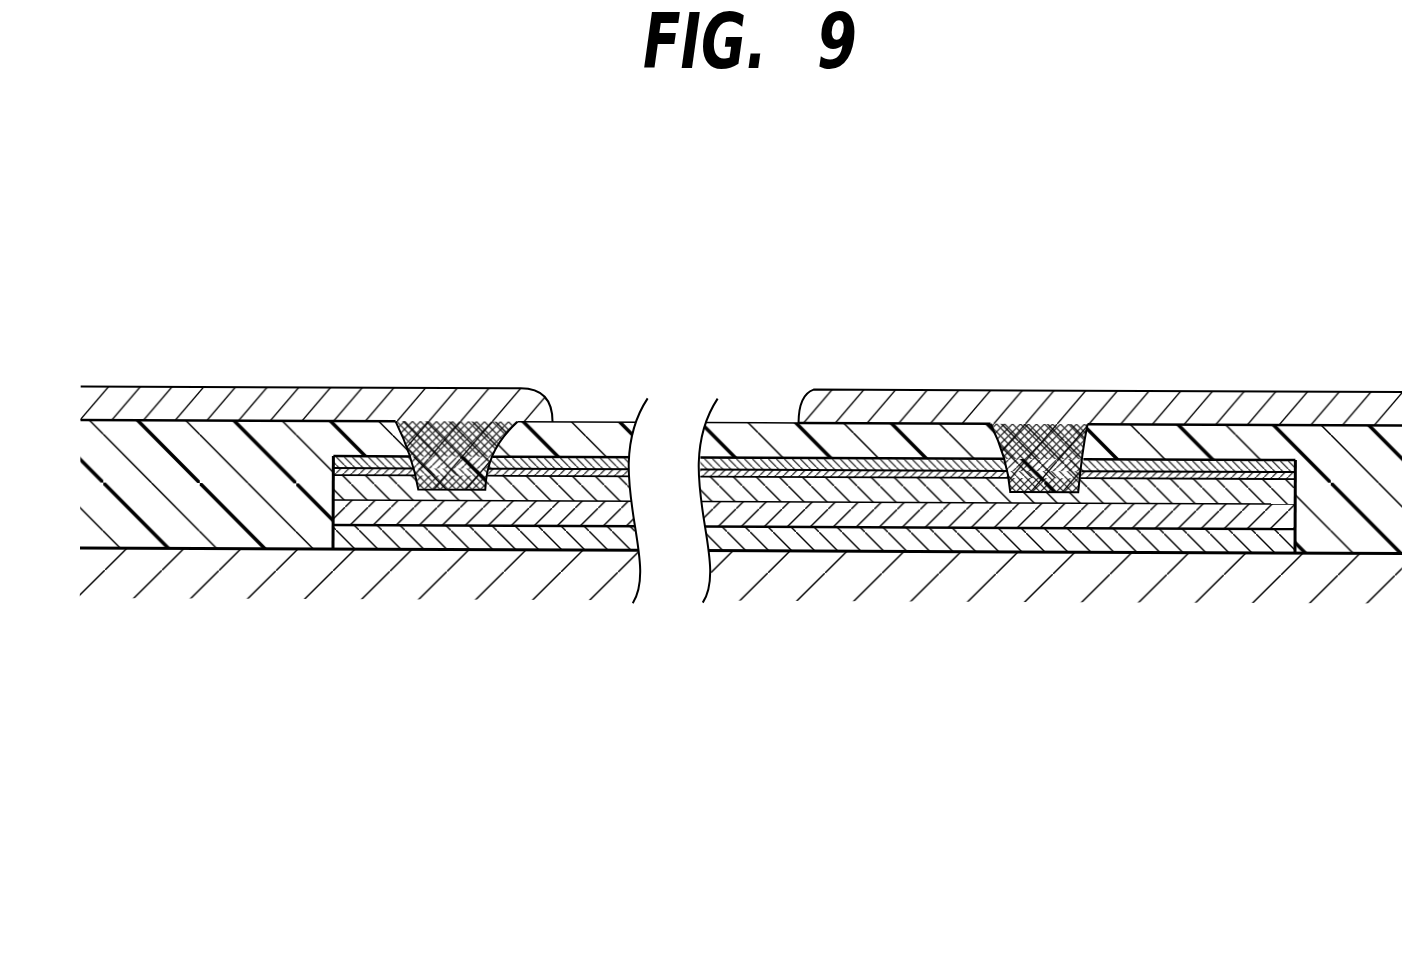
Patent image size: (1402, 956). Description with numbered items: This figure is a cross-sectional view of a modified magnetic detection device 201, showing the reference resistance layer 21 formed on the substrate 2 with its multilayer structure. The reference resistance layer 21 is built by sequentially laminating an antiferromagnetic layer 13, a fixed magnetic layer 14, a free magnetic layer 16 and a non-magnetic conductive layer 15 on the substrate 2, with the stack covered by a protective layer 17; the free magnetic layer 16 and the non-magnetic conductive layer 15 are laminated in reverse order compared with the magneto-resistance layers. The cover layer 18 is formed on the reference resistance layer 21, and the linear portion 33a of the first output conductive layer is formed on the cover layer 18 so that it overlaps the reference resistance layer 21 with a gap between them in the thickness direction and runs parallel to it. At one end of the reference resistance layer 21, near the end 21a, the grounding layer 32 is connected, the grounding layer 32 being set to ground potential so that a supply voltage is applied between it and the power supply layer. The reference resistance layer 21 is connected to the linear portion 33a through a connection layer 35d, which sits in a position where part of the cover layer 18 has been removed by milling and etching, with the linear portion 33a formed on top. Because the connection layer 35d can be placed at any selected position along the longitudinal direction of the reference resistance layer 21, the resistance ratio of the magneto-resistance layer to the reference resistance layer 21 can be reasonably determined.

The substrate 2 is at (150, 567).
The antiferromagnetic layer 13 is at (828, 542).
The fixed magnetic layer 14 is at (754, 528).
The non-magnetic conductive layer 15 is at (751, 473).
The free magnetic layer 16 is at (900, 488).
The protective layer 17 is at (777, 462).
The cover layer 18 is at (232, 495).
The reference resistance layer 21 is at (321, 546).
The end of the reference resistance layer 21a is at (970, 555).
The grounding layer 32 is at (290, 400).
The linear portion of the first output conductive layer 33a is at (1128, 400).
The connection layer 35d is at (1040, 482).
The magnetic detection device 201 is at (788, 279).